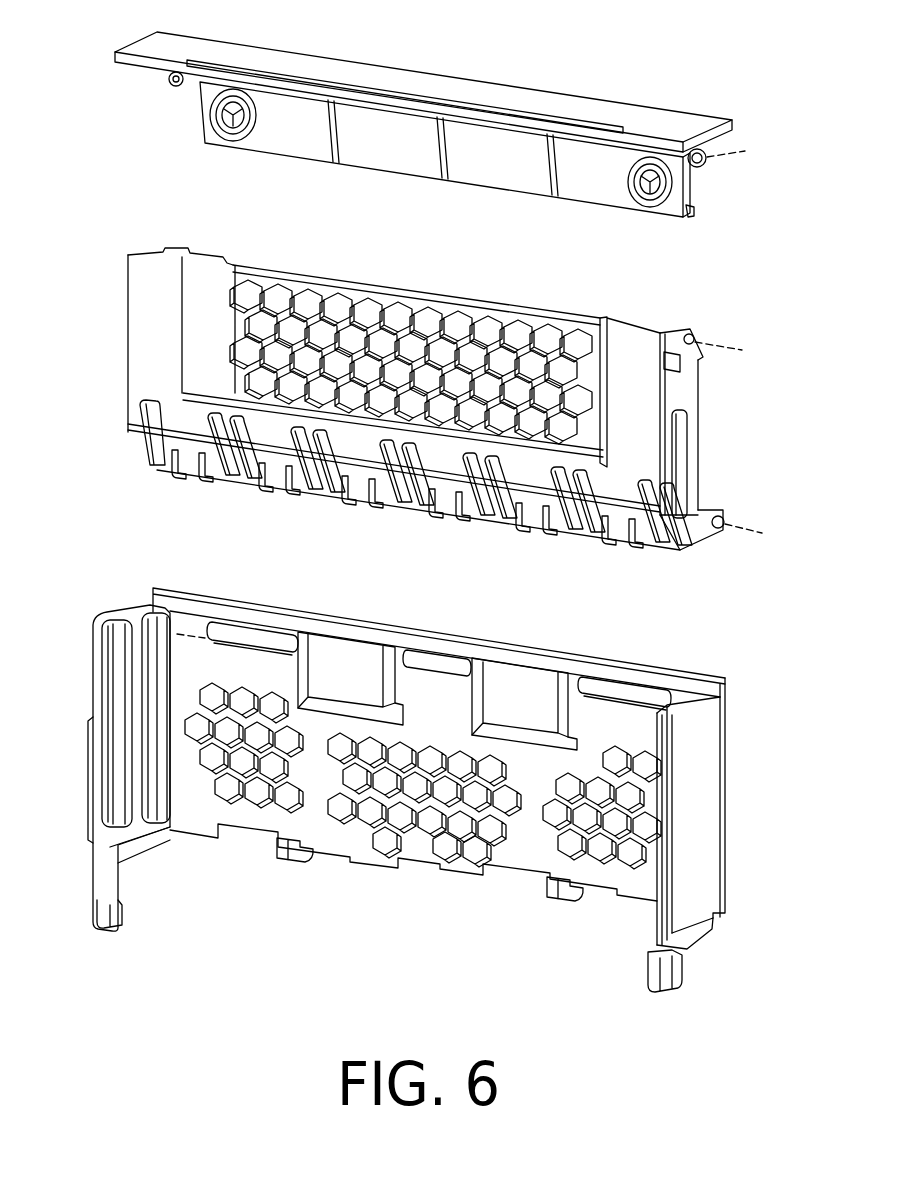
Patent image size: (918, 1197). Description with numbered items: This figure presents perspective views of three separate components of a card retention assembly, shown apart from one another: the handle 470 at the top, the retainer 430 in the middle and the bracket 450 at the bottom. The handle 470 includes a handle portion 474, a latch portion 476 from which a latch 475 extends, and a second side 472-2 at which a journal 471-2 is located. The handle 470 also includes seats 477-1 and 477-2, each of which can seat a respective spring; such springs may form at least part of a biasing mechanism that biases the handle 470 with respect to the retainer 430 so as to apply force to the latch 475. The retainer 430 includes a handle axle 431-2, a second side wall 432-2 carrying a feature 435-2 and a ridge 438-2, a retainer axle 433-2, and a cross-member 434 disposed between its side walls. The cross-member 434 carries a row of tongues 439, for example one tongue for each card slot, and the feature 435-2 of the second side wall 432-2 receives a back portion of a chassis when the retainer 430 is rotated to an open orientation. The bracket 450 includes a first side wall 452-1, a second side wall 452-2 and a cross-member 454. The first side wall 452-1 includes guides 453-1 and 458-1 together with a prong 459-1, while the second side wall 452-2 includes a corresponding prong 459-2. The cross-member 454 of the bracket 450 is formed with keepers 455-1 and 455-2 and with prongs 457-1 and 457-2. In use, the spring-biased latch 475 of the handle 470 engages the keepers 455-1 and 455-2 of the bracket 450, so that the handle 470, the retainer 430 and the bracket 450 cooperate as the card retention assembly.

The handle 470 is at (170, 50).
The handle portion 474 is at (432, 80).
The latch portion 476 is at (497, 175).
The seat 477-1 is at (227, 141).
The seat 477-2 is at (647, 207).
The journal 471-2 is at (703, 167).
The second side 472-2 is at (735, 166).
The latch 475 is at (690, 216).
The retainer 430 is at (142, 282).
The cross-member 434 is at (243, 400).
The tongues 439 is at (280, 470).
The handle axle 431-2 is at (689, 333).
The second side wall 432-2 is at (727, 333).
The ridge 438-2 is at (688, 442).
The feature 435-2 is at (693, 478).
The retainer axle 433-2 is at (721, 528).
The bracket 450 is at (532, 657).
The cross-member 454 is at (550, 777).
The keeper 455-1 is at (338, 700).
The keeper 455-2 is at (512, 727).
The prong 457-1 is at (293, 860).
The prong 457-2 is at (552, 899).
The first side wall 452-1 is at (114, 578).
The second side wall 452-2 is at (700, 642).
The guide 453-1 is at (163, 822).
The guide 458-1 is at (126, 818).
The prong 459-1 is at (122, 913).
The prong 459-2 is at (653, 979).